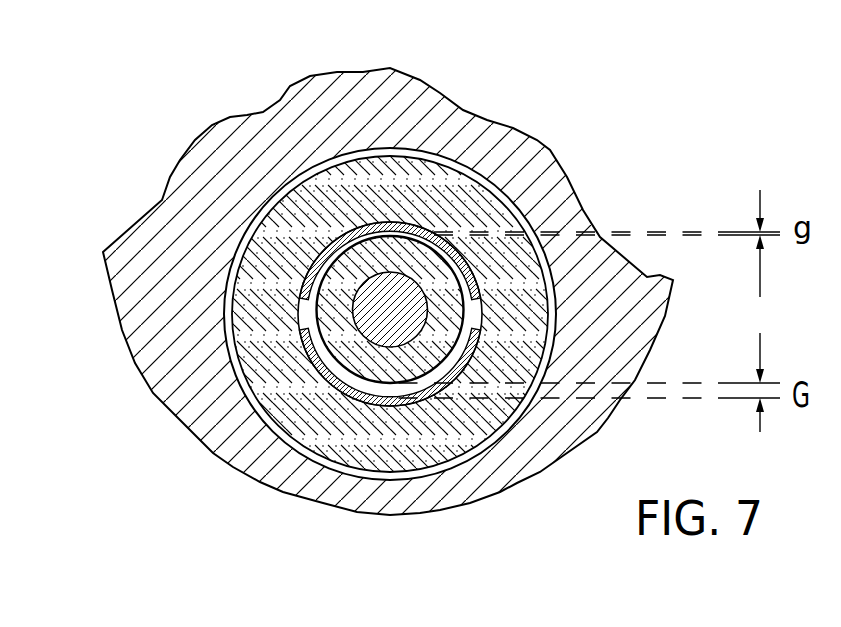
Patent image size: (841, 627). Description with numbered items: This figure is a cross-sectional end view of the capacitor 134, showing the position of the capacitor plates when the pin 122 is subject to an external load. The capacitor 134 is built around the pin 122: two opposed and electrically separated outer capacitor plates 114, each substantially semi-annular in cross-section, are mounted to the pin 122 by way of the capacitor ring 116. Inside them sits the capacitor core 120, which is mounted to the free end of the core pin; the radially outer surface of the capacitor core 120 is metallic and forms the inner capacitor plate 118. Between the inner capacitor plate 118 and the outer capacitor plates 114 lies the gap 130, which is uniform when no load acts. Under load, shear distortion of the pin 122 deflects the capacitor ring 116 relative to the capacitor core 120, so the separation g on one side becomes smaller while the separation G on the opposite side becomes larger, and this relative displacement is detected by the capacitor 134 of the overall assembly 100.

The assembly 100 is at (110, 95).
The outer capacitor plates 114 is at (277, 230).
The capacitor ring 116 is at (463, 207).
The inner capacitor plate 118 is at (323, 343).
The capacitor core 120 is at (317, 315).
The pin 122 is at (447, 130).
The gap 130 is at (347, 380).
The capacitor 134 is at (302, 175).